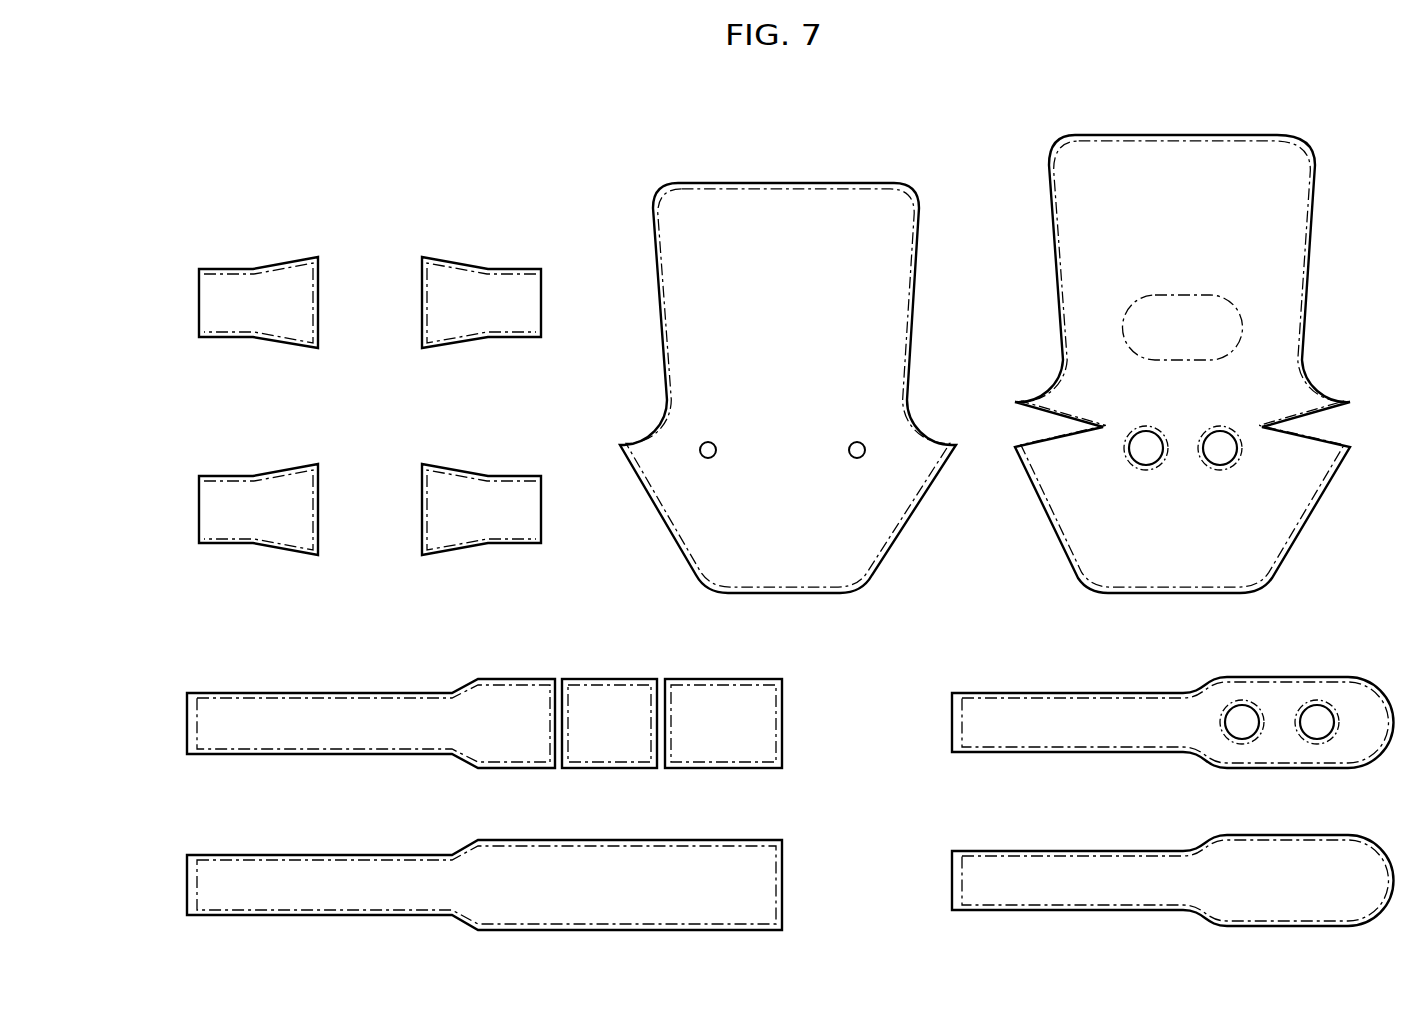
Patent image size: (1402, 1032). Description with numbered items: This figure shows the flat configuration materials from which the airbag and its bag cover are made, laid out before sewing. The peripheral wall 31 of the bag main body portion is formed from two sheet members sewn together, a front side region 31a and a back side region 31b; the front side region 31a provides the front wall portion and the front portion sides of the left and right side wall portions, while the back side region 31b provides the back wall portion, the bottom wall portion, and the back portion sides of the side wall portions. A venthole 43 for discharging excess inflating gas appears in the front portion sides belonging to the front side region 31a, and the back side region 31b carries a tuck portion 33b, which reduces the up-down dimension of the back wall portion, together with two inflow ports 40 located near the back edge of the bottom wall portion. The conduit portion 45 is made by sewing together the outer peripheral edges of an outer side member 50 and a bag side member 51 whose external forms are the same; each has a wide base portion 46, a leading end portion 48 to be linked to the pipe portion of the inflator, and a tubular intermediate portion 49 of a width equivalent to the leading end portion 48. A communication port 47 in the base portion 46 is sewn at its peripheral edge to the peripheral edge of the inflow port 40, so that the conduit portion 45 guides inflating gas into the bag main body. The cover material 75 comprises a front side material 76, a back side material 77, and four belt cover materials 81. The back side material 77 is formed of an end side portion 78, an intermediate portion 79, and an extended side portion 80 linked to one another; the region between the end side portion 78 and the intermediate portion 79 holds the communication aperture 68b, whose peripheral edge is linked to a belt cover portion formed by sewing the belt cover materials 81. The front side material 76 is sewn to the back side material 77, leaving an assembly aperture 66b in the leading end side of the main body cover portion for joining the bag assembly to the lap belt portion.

The peripheral wall 31 is at (1042, 157).
The front side region 31a is at (925, 258).
The back side region 31b is at (1035, 258).
The tuck portion 33b is at (1180, 308).
The inflow port 40 is at (1218, 452).
The venthole 43 is at (849, 450).
The conduit portion 45 is at (893, 752).
The base portion 46 is at (1273, 775).
The communication port 47 is at (1320, 715).
The leading end portion 48 is at (958, 758).
The intermediate portion 49 is at (1070, 758).
The outer side member 50 is at (952, 887).
The bag side member 51 is at (952, 713).
The assembly aperture 66b is at (793, 752).
The communication aperture 68b is at (558, 776).
The cover material 75 is at (268, 248).
The front side material 76 is at (298, 847).
The back side material 77 is at (184, 573).
The end side portion 78 is at (721, 697).
The intermediate portion 79 is at (601, 697).
The extended side portion 80 is at (292, 708).
The belt cover material 81 is at (428, 355).